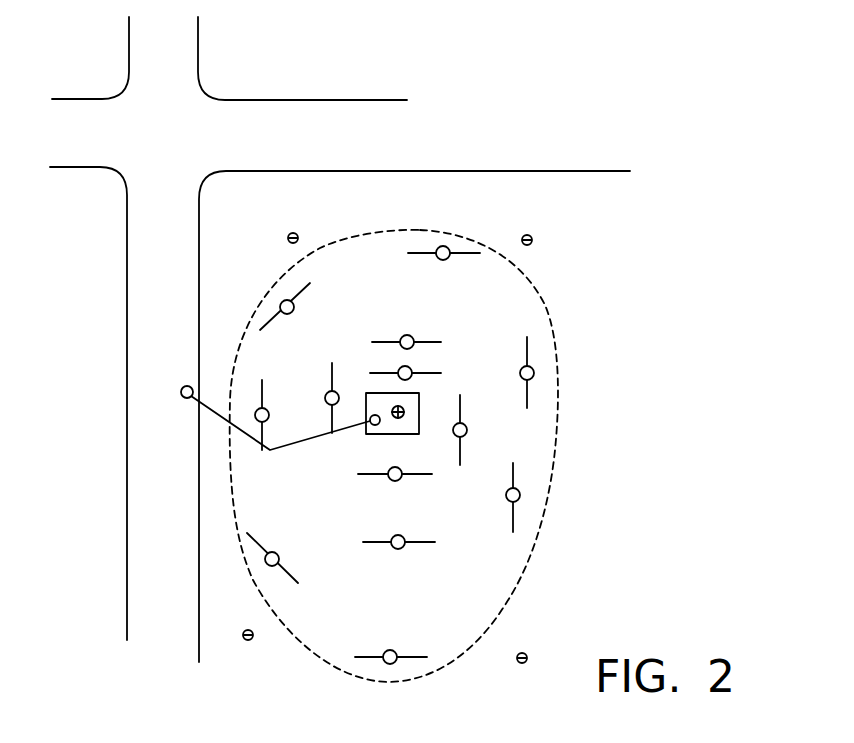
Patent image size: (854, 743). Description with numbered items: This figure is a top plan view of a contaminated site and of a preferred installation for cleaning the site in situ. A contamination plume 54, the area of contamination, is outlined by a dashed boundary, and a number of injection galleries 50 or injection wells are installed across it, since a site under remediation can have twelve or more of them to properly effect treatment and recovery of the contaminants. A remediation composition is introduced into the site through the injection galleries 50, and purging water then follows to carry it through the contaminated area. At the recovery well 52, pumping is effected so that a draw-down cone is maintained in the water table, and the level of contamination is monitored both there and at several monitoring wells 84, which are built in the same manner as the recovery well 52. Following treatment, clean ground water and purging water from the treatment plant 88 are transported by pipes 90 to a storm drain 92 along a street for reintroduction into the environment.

The injection gallery 50 is at (282, 297).
The recovery well 52 is at (404, 410).
The contamination plume 54 is at (520, 572).
The monitoring well 84 is at (297, 234).
The treatment plant 88 is at (375, 427).
The pipes 90 is at (217, 417).
The storm drain 92 is at (181, 392).